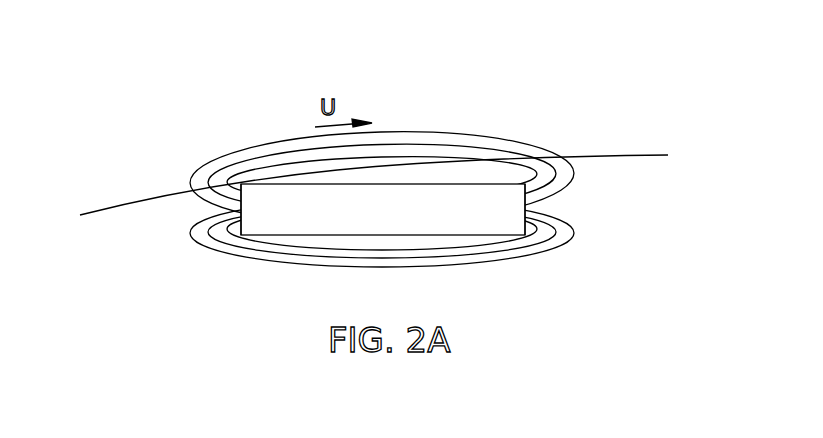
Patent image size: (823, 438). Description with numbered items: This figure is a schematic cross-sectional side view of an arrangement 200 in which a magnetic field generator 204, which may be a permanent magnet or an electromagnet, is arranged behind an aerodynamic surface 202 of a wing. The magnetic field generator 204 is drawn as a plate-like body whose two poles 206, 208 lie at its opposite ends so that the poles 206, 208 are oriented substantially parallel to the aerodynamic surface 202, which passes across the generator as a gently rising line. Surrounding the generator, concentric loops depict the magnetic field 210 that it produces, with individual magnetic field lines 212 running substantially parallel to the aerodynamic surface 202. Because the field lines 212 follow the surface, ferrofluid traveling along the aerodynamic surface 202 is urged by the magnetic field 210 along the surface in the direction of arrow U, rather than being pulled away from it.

The system 200 is at (100, 47).
The aerodynamic surface 202 is at (118, 205).
The magnetic field generator 204 is at (410, 220).
The pole 206 is at (242, 207).
The pole 208 is at (525, 203).
The magnetic field 210 is at (400, 163).
The magnetic field lines 212 is at (453, 136).